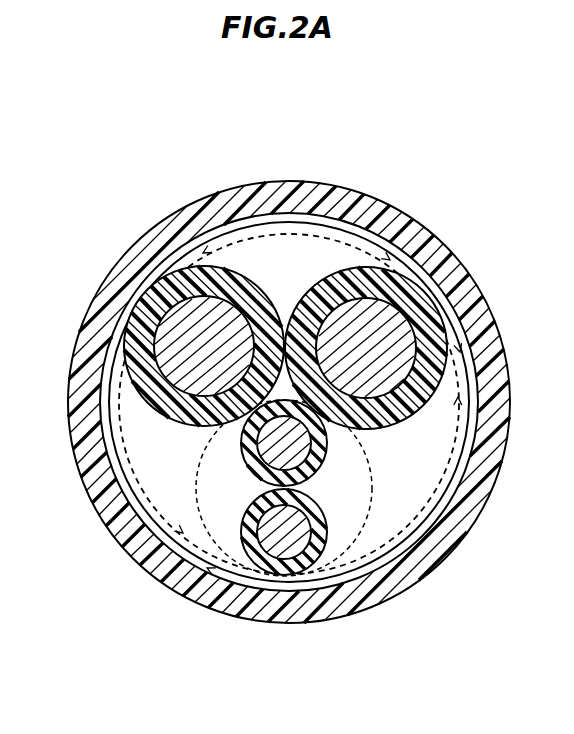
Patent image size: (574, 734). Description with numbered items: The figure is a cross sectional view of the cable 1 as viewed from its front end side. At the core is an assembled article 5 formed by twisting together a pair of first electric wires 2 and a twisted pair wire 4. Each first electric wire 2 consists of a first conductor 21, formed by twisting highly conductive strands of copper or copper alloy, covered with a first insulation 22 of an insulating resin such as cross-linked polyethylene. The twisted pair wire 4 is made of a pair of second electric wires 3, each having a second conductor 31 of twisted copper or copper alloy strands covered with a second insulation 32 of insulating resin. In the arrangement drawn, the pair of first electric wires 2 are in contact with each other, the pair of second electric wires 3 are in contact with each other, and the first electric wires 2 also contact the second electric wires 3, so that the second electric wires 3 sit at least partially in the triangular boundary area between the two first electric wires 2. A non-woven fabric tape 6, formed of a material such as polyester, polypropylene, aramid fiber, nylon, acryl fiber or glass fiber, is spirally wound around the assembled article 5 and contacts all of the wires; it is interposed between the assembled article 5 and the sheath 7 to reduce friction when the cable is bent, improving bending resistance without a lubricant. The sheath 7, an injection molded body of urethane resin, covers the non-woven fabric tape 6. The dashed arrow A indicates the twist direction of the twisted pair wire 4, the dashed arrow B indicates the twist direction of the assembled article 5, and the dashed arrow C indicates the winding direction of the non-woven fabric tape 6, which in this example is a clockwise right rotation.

The cable 1 is at (146, 195).
The first electric wire 2 is at (270, 303).
The first conductor 21 is at (385, 318).
The first insulation 22 is at (428, 322).
The second electric wire 3 is at (216, 536).
The second conductor 31 is at (280, 548).
The second insulation 32 is at (297, 567).
The twisted pair wire 4 is at (207, 543).
The assembled article 5 is at (410, 449).
The non-woven fabric tape 6 is at (468, 405).
The sheath 7 is at (487, 362).
The dashed arrow A is at (375, 482).
The dashed arrow B is at (290, 235).
The dashed arrow C is at (463, 328).